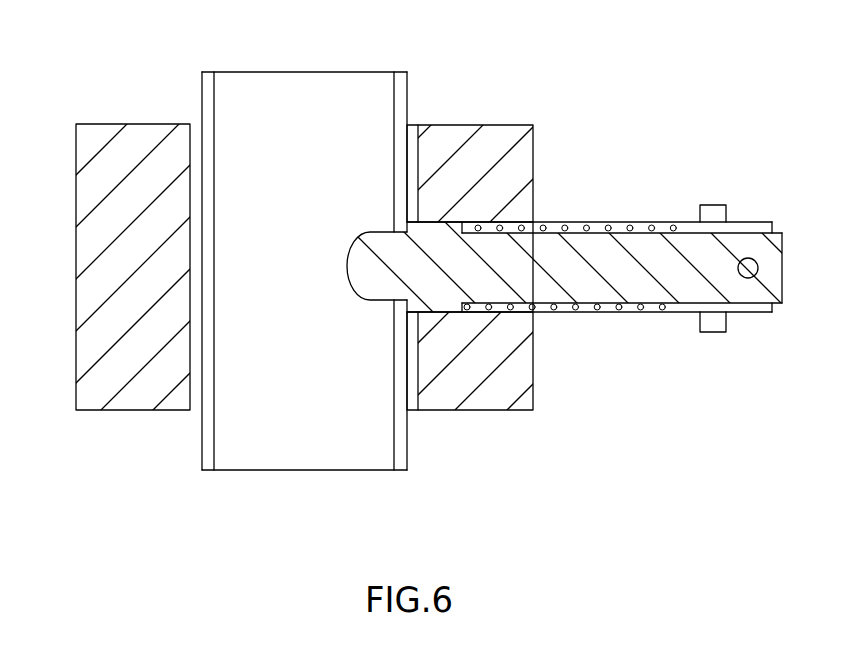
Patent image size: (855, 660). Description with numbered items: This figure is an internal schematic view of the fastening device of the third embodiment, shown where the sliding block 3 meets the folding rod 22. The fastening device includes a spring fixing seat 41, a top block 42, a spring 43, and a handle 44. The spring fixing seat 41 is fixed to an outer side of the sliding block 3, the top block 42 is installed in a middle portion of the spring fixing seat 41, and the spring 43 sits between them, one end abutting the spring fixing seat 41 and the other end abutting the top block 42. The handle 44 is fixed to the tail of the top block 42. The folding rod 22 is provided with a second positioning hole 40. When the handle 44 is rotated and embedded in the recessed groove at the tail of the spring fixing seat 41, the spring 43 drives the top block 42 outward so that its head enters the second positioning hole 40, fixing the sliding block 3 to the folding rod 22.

The sliding block 3 is at (447, 138).
The folding rod 22 is at (258, 100).
The second positioning hole 40 is at (403, 232).
The spring fixing seat 41 is at (585, 222).
The top block 42 is at (378, 286).
The spring 43 is at (553, 313).
The handle 44 is at (749, 270).